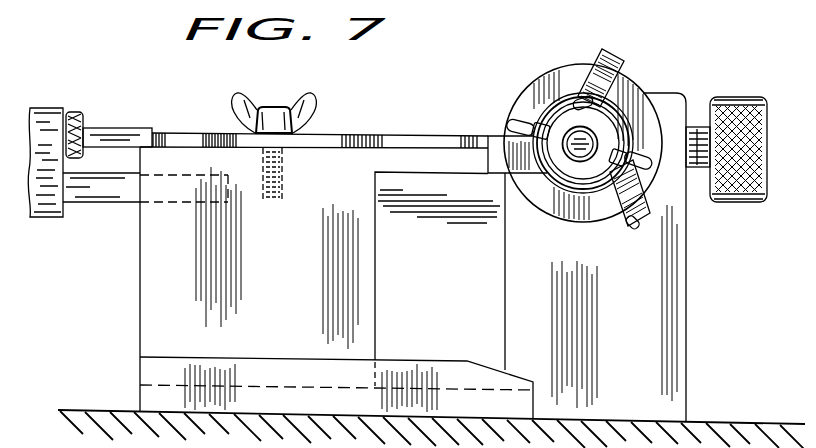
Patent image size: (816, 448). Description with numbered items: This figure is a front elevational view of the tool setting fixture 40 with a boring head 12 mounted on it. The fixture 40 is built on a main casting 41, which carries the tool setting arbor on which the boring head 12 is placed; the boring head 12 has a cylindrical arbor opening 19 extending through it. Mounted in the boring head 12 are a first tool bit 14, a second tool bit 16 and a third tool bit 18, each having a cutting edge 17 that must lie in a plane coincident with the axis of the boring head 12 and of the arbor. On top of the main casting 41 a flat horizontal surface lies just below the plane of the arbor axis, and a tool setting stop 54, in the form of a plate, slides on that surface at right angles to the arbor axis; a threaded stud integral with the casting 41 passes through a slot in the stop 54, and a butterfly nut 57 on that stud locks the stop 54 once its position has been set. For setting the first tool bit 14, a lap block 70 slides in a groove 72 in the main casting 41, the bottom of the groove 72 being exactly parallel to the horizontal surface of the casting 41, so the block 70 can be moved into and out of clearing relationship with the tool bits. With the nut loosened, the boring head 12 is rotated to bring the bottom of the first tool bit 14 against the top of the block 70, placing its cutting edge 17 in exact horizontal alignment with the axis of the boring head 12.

The boring head 12 is at (544, 69).
The first tool bit 14 is at (498, 160).
The second tool bit 16 is at (612, 58).
The cutting edge 17 is at (507, 127).
The third tool bit 18 is at (639, 220).
The arbor opening 19 is at (600, 123).
The tool setting fixture 40 is at (137, 326).
The main casting 41 is at (150, 254).
The tool setting stop 54 is at (182, 136).
The butterfly nut 57 is at (249, 99).
The lap block 70 is at (397, 247).
The groove 72 is at (155, 383).